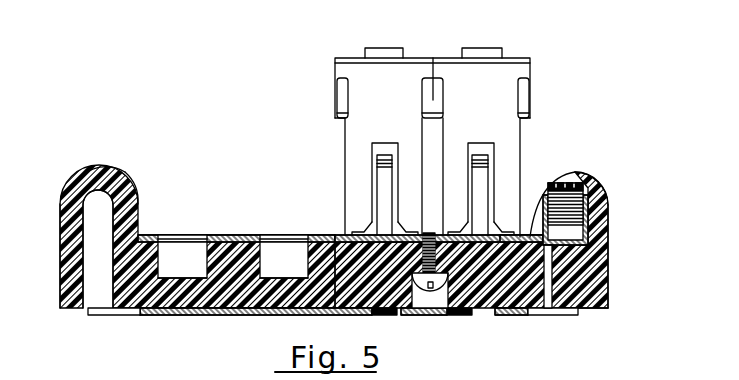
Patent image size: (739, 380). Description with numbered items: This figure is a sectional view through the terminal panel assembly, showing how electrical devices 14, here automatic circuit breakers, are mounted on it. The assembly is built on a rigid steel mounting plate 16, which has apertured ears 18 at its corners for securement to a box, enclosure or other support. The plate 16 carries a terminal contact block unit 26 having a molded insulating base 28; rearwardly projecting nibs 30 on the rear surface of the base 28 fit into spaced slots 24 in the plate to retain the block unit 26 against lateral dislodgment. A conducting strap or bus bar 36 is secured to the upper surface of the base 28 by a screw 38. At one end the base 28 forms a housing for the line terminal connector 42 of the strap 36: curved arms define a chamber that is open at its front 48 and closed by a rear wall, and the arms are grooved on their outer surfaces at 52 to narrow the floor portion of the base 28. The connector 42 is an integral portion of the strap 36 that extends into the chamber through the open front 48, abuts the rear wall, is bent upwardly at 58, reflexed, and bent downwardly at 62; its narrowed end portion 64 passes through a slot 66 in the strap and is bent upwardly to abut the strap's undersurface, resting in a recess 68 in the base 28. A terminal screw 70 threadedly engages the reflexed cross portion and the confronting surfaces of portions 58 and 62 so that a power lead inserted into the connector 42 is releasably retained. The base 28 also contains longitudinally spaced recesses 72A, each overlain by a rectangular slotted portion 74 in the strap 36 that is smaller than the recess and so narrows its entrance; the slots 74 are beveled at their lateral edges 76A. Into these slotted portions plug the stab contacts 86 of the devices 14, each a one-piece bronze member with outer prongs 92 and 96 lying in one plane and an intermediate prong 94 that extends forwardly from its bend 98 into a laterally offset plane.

The electrical devices 14 is at (334, 67).
The mounting plate 16 is at (152, 312).
The apertured ears 18 is at (104, 314).
The spaced slots 24 is at (410, 314).
The terminal contact block unit 26 is at (140, 215).
The insulating base 28 is at (606, 296).
The nibs 30 is at (392, 310).
The conducting strap 36 is at (224, 235).
The screw 38 is at (440, 287).
The line terminal connector 42 is at (590, 238).
The open front 48 is at (534, 212).
The grooves 52 is at (92, 261).
The upwardly bent portion 58 is at (586, 209).
The downwardly bent portion 62 is at (546, 207).
The narrowed end portion 64 is at (550, 270).
The slot 66 is at (590, 222).
The recess 68 is at (546, 262).
The terminal screw 70 is at (566, 183).
The recesses 72A is at (193, 272).
The slotted portion 74 is at (182, 238).
The beveled lateral edge 76A is at (233, 260).
The stab contact 86 is at (383, 190).
The outer prong 92 is at (370, 230).
The intermediate prong 94 is at (384, 178).
The outer prong 96 is at (402, 229).
The bend 98 is at (385, 165).